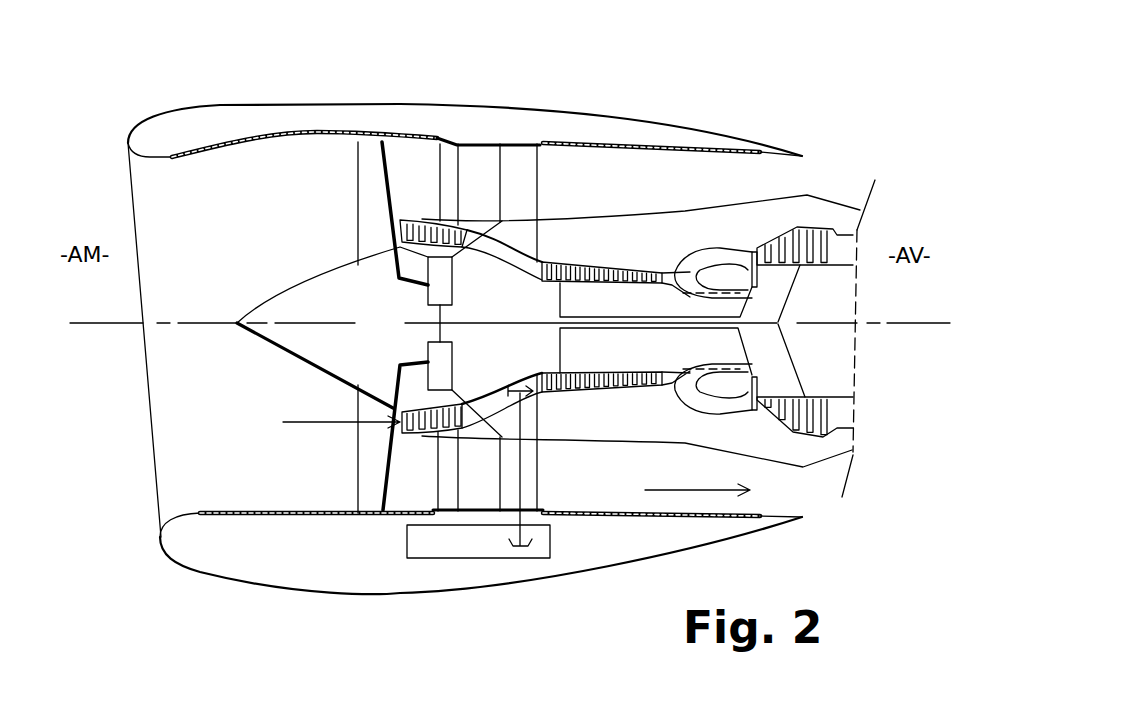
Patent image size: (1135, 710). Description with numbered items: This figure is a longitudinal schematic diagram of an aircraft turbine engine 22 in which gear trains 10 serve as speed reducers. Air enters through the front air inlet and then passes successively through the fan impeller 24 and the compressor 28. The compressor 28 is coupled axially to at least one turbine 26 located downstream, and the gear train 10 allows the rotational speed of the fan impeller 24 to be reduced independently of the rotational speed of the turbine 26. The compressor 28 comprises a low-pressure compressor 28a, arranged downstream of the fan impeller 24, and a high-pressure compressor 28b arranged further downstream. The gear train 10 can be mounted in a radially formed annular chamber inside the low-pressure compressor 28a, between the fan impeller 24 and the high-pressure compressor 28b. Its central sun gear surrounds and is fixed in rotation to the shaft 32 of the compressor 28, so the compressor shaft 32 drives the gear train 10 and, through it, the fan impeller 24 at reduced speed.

The gear train 10 is at (427, 348).
The aircraft turbine engine 22 is at (668, 106).
The fan impeller 24 is at (358, 173).
The turbine 26 is at (805, 226).
The compressor 28 is at (561, 245).
The low-pressure compressor 28a is at (422, 220).
The high-pressure compressor 28b is at (620, 273).
The shaft 32 is at (477, 323).